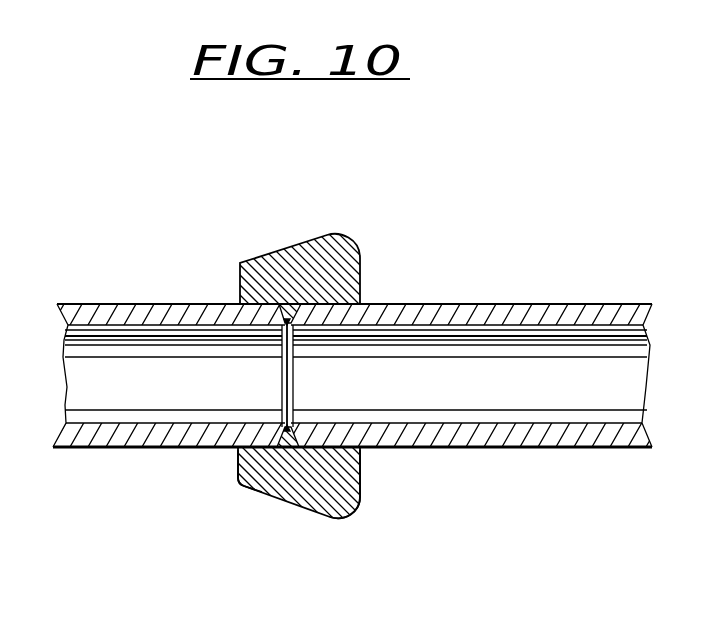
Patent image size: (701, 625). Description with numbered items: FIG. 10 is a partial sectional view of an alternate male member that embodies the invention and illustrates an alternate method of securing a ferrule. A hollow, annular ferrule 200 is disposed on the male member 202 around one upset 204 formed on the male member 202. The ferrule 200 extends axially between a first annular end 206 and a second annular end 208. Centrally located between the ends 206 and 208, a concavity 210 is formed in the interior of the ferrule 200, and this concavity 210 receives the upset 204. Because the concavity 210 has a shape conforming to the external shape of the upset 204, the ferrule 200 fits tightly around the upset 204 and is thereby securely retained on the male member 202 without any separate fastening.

The ferrule 200 is at (337, 397).
The male member 202 is at (607, 318).
The upset 204 is at (337, 423).
The annular end 206 is at (238, 470).
The annular end 208 is at (362, 497).
The concavity 210 is at (288, 450).